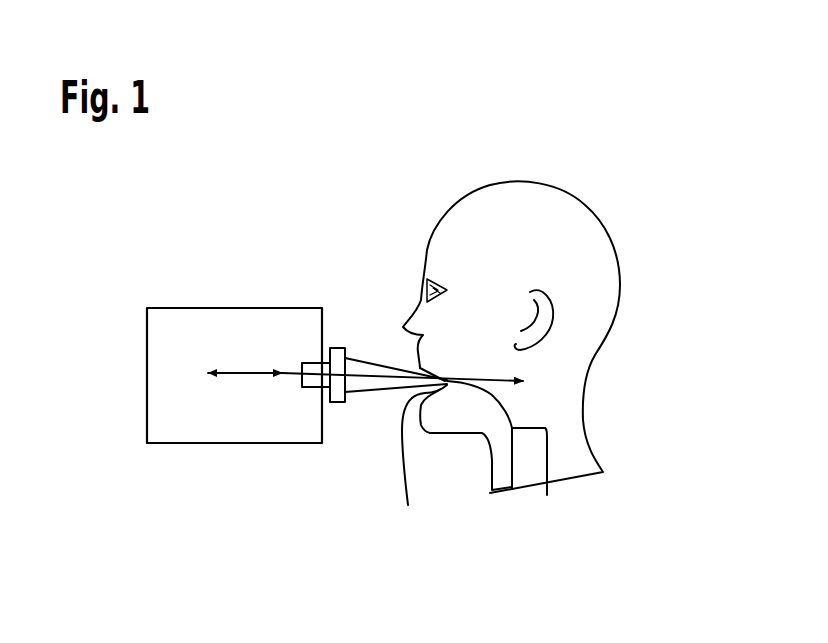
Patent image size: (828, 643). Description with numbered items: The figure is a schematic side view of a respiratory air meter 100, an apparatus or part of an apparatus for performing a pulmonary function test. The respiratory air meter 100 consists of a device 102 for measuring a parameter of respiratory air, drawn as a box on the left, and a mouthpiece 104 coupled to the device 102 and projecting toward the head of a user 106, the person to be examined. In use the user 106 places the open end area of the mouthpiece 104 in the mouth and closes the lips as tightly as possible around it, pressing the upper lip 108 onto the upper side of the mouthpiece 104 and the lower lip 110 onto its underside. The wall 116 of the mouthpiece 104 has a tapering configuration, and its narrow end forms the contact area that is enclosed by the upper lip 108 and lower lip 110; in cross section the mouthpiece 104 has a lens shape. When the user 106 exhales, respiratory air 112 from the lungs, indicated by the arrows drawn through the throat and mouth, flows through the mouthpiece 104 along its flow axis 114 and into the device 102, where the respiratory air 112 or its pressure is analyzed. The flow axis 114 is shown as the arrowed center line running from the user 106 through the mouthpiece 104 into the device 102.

The respiratory air meter 100 is at (245, 258).
The device for measuring a parameter of respiratory air 102 is at (163, 450).
The mouthpiece 104 is at (375, 355).
The user 106 is at (610, 237).
The upper lip 108 is at (418, 367).
The lower lip 110 is at (408, 505).
The respiratory air 112 is at (547, 495).
The flow axis 114 is at (233, 373).
The wall 116 is at (363, 402).